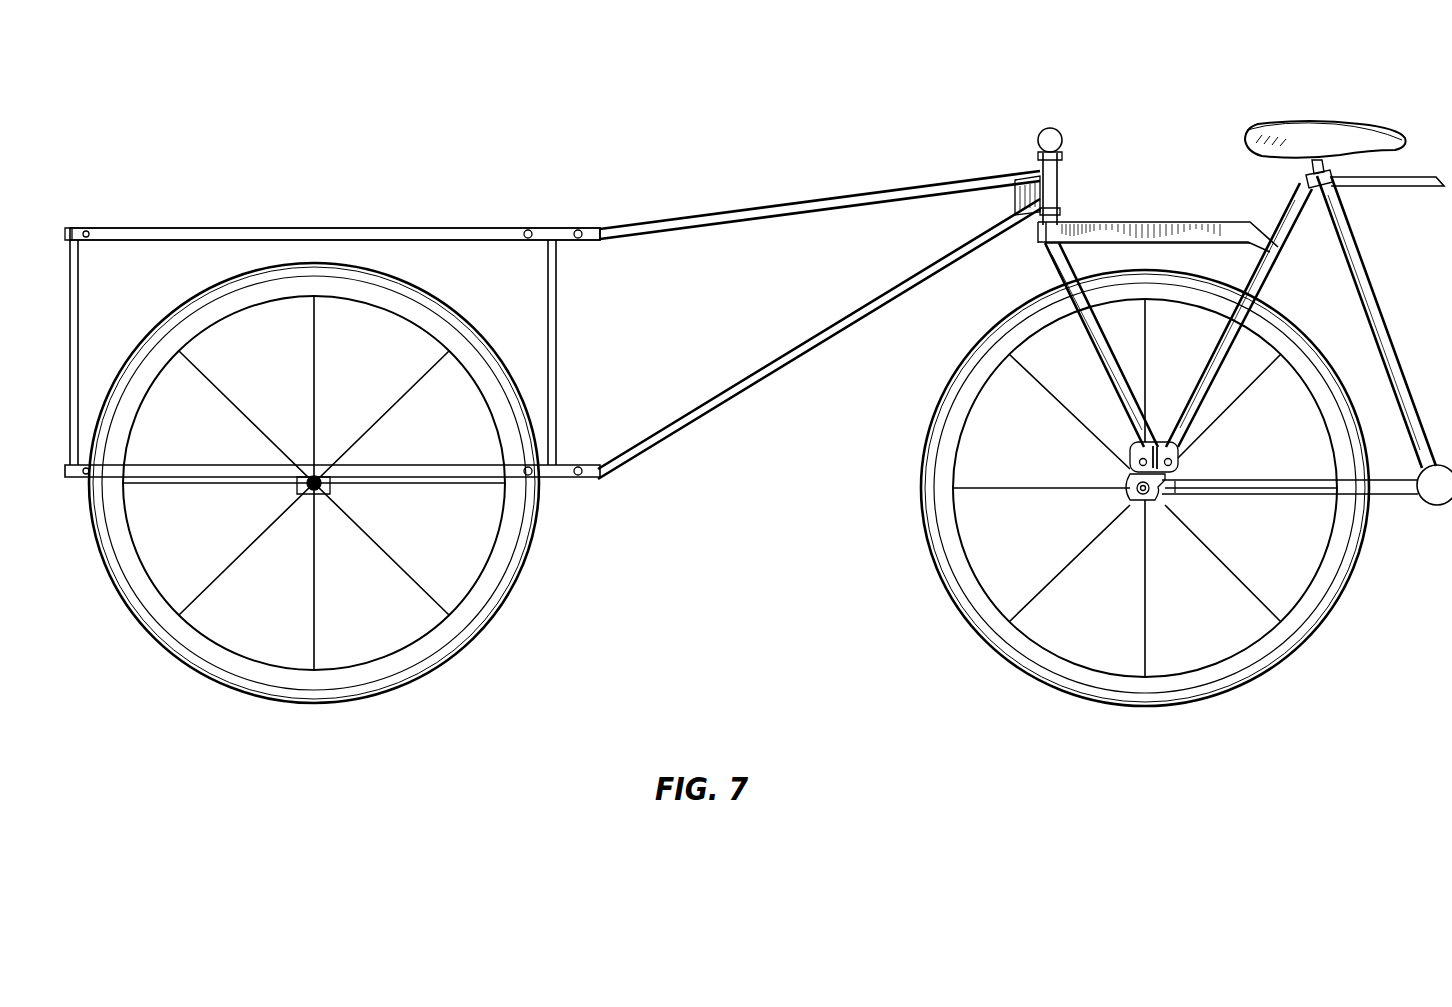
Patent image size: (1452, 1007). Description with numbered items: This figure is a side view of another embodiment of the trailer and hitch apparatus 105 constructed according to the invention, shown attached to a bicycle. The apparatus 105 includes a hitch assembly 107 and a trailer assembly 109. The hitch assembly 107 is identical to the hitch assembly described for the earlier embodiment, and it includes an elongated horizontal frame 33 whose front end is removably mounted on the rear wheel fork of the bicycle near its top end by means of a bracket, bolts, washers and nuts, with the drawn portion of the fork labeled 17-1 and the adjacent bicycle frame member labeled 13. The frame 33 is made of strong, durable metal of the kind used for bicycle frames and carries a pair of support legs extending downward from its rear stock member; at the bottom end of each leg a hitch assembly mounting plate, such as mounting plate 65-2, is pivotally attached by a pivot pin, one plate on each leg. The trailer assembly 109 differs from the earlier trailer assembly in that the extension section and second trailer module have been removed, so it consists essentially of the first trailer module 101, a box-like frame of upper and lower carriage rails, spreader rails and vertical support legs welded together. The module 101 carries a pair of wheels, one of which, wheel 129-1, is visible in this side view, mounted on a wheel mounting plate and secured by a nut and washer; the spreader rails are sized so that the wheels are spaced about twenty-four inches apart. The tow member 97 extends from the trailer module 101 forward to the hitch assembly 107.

The chain stay 13 is at (1390, 500).
The seat stay 17-1 is at (1217, 357).
The elongated horizontal frame 33 is at (1153, 249).
The hitch assembly mounting plate 65-2 is at (1130, 453).
The tow arm 97 is at (765, 378).
The first trailer module 101 is at (349, 219).
The trailer and hitch apparatus 105 is at (734, 560).
The hitch assembly 107 is at (1191, 211).
The trailer assembly 109 is at (582, 197).
The wheel 129-1 is at (228, 688).